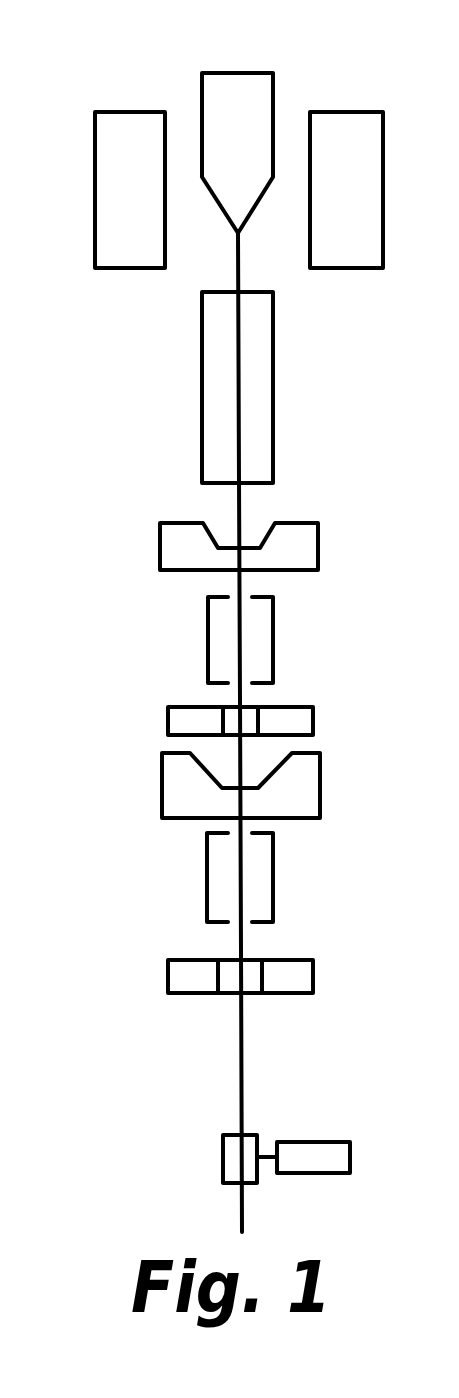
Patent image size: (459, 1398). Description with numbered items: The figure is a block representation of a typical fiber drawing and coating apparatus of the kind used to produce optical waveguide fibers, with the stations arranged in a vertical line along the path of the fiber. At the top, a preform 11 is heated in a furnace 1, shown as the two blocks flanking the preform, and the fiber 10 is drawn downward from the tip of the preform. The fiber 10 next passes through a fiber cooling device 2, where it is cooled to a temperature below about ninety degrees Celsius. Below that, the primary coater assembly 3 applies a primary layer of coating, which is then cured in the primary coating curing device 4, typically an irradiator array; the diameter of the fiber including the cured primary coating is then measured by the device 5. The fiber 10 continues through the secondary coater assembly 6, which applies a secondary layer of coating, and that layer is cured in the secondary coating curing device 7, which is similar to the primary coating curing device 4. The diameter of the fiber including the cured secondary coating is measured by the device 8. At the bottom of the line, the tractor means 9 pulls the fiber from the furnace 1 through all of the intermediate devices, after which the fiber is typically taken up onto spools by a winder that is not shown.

The furnace 1 is at (53, 167).
The fiber cooling device 2 is at (273, 388).
The primary coater assembly 3 is at (318, 546).
The primary coating curing device 4 is at (273, 632).
The diameter measuring device 5 is at (313, 719).
The secondary coater assembly 6 is at (320, 788).
The secondary coating curing device 7 is at (273, 875).
The diameter measuring device 8 is at (313, 977).
The tractor means 9 is at (322, 1142).
The fiber 10 is at (239, 257).
The preform 11 is at (237, 87).